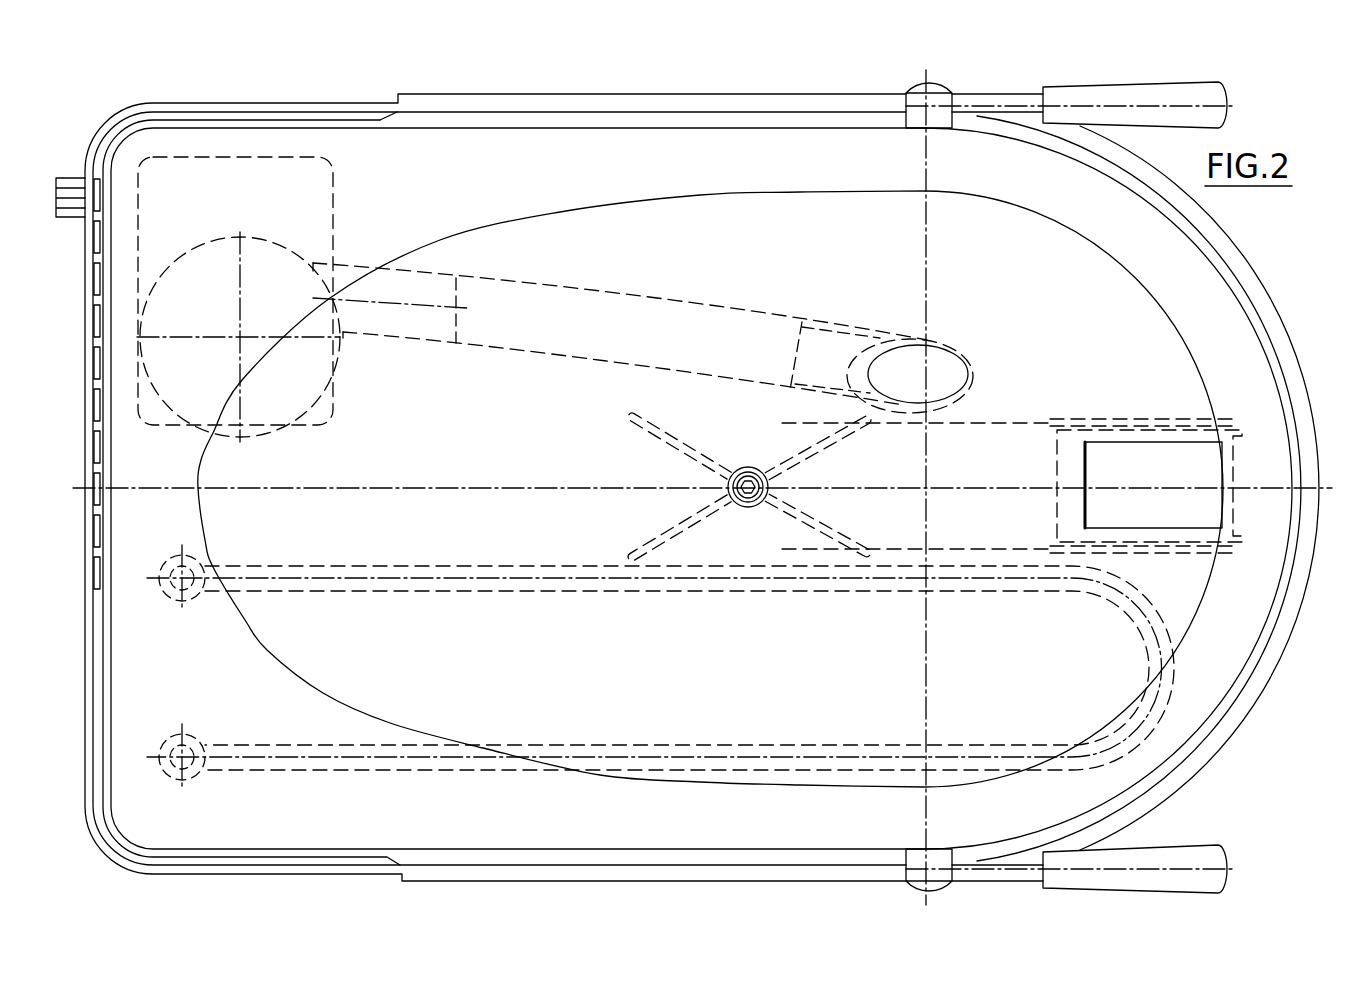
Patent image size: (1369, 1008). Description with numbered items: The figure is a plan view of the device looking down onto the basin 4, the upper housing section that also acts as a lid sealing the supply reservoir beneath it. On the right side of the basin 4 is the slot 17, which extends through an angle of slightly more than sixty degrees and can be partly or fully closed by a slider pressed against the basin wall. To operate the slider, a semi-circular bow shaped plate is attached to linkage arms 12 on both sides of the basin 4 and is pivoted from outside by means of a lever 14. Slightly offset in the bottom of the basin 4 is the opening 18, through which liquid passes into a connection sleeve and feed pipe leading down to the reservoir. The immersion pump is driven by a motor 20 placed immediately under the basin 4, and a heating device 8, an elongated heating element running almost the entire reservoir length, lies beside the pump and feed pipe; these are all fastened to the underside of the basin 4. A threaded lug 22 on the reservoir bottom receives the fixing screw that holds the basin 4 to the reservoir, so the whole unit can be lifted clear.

The basin 4 is at (625, 223).
The heating device 8 is at (737, 582).
The linkage arms 12 is at (922, 92).
The lever 14 is at (1148, 92).
The slot 17 is at (1120, 460).
The opening 18 is at (924, 366).
The motor 20 is at (232, 183).
The threaded lug 22 is at (748, 467).